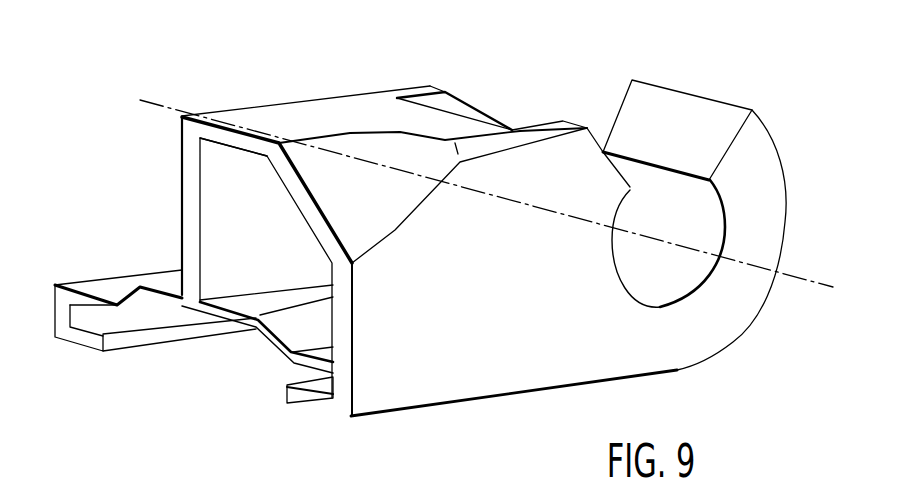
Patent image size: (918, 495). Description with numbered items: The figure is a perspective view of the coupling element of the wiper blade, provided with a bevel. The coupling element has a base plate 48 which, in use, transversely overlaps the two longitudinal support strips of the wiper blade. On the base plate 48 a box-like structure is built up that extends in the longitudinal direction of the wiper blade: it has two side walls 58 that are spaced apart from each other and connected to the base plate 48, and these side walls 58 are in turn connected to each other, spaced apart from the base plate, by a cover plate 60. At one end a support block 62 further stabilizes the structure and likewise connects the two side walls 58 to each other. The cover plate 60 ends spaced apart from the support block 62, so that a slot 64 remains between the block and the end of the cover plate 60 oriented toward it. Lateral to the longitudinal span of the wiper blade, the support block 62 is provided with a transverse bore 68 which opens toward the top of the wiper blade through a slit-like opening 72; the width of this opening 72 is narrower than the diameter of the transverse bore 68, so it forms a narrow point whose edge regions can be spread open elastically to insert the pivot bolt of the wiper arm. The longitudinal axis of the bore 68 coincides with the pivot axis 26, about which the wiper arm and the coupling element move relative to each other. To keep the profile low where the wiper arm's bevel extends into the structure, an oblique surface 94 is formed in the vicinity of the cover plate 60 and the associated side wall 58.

The pivot axis 26 is at (812, 283).
The base plate 48 is at (228, 322).
The side walls 58 is at (187, 197).
The cover plate 60 is at (253, 143).
The support block 62 is at (775, 195).
The slot 64 is at (443, 103).
The transverse bore 68 is at (647, 268).
The slit-like opening 72 is at (650, 188).
The oblique surface 94 is at (387, 194).